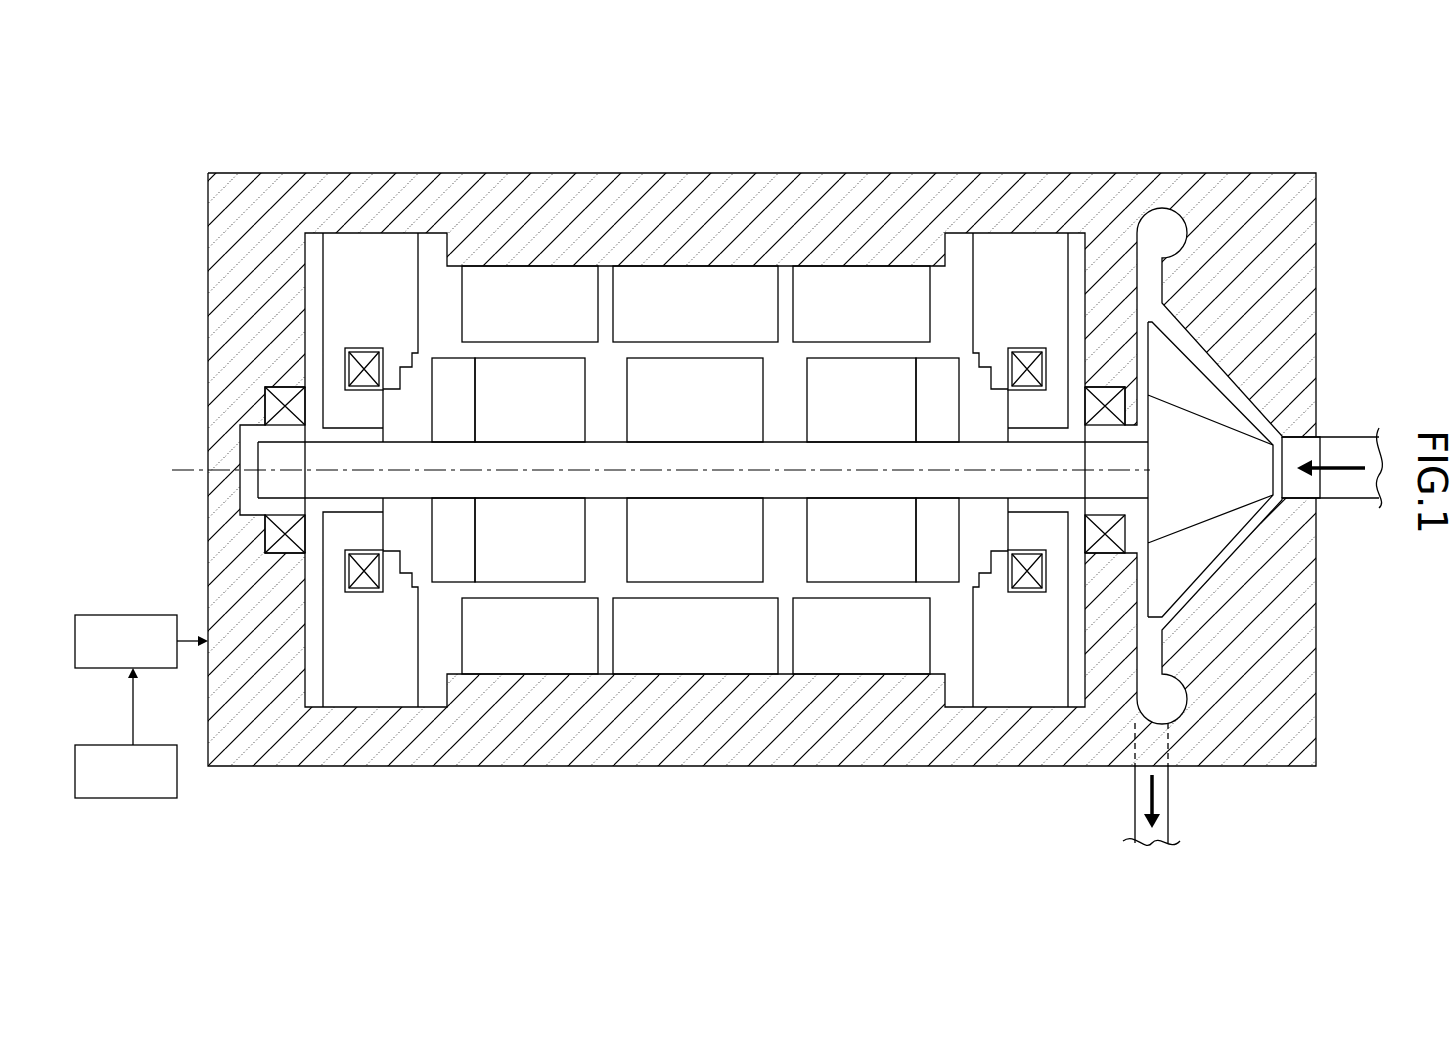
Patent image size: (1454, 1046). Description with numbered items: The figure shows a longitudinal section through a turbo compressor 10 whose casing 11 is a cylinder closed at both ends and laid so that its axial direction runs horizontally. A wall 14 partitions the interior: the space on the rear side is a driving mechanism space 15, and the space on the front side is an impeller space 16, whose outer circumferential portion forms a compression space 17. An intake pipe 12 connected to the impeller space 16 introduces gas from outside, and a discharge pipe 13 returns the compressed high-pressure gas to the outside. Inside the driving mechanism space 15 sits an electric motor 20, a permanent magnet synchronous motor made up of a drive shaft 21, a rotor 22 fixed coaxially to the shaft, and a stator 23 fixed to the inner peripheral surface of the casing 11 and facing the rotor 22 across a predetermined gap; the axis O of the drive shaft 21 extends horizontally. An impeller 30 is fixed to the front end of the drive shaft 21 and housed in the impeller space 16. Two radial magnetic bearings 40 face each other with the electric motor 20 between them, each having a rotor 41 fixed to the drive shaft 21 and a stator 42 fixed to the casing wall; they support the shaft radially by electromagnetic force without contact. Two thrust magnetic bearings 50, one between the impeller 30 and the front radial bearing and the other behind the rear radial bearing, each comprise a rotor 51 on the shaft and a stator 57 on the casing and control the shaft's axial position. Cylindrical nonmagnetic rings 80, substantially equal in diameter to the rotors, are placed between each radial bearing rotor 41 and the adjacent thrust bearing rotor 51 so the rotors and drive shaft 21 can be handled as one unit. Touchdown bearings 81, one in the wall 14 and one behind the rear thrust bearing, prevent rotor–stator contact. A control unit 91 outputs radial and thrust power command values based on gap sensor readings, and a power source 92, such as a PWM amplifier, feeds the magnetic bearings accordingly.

The turbo compressor 10 is at (1321, 152).
The casing 11 is at (767, 168).
The intake pipe 12 is at (1340, 488).
The discharge pipe 13 is at (1167, 792).
The wall 14 is at (1112, 650).
The driving mechanism space 15 is at (607, 560).
The impeller space 16 is at (1230, 390).
The compression space 17 is at (1160, 227).
The electric motor 20 is at (694, 260).
The drive shaft 21 is at (720, 485).
The rotor 22 is at (675, 565).
The stator 23 is at (755, 650).
The impeller 30 is at (1191, 549).
The radial magnetic bearing 40 is at (542, 260).
The rotor 41 is at (545, 565).
The stator 42 is at (500, 645).
The thrust magnetic bearing 50 is at (362, 227).
The rotor 51 is at (425, 560).
The stator 57 is at (371, 690).
The nonmagnetic ring 80 is at (453, 386).
The touchdown bearing 81 is at (285, 386).
The control unit 91 is at (110, 745).
The power source 92 is at (135, 615).
The axis O is at (184, 468).